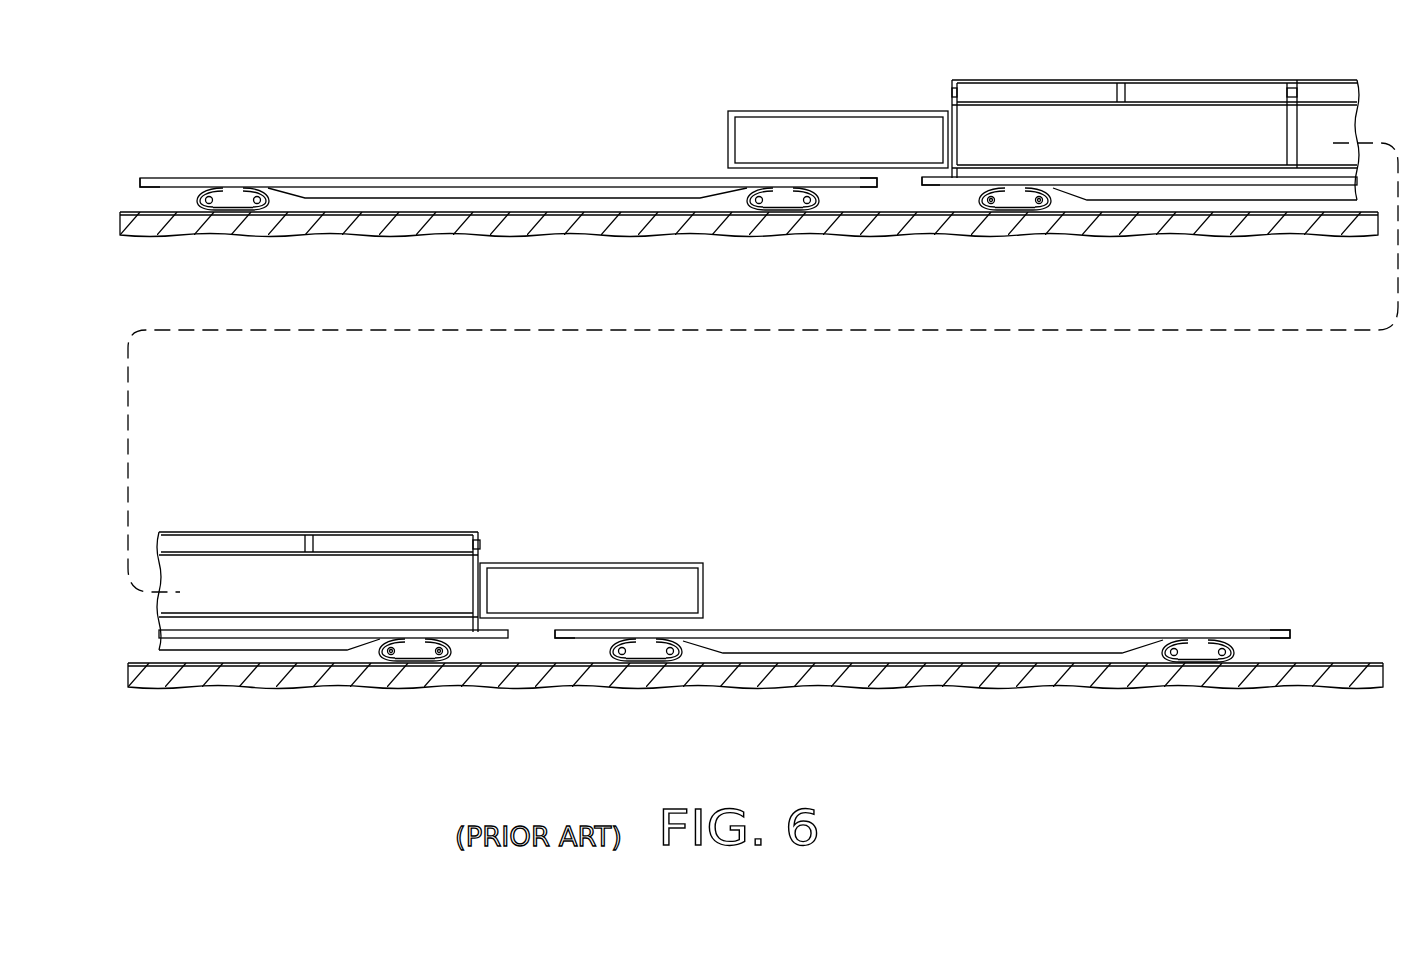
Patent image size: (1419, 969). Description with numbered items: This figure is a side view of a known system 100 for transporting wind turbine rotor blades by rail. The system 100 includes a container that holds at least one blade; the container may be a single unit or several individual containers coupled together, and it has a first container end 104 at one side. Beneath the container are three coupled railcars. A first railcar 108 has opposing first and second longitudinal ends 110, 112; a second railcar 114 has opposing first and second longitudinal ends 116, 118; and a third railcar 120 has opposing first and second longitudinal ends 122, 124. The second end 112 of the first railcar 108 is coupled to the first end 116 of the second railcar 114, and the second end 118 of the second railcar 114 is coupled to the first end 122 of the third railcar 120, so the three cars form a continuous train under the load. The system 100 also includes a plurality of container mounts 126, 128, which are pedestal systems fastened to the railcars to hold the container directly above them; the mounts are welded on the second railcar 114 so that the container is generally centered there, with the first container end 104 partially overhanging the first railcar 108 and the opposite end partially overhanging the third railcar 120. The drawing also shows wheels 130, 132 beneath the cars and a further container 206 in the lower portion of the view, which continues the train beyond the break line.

The system 100 is at (556, 90).
The first container end 104 is at (790, 111).
The first railcar 108 is at (498, 186).
The first longitudinal end 110 is at (150, 178).
The second longitudinal end 112 is at (848, 184).
The second railcar 114 is at (1235, 187).
The first longitudinal end 116 is at (933, 187).
The second longitudinal end 118 is at (492, 636).
The third railcar 120 is at (883, 640).
The first longitudinal end 122 is at (575, 636).
The second longitudinal end 124 is at (1267, 632).
The container mount 126 is at (947, 188).
The container mount 128 is at (483, 640).
The wheels 130 is at (1037, 207).
The wheels 132 is at (437, 662).
The container 206 is at (590, 563).